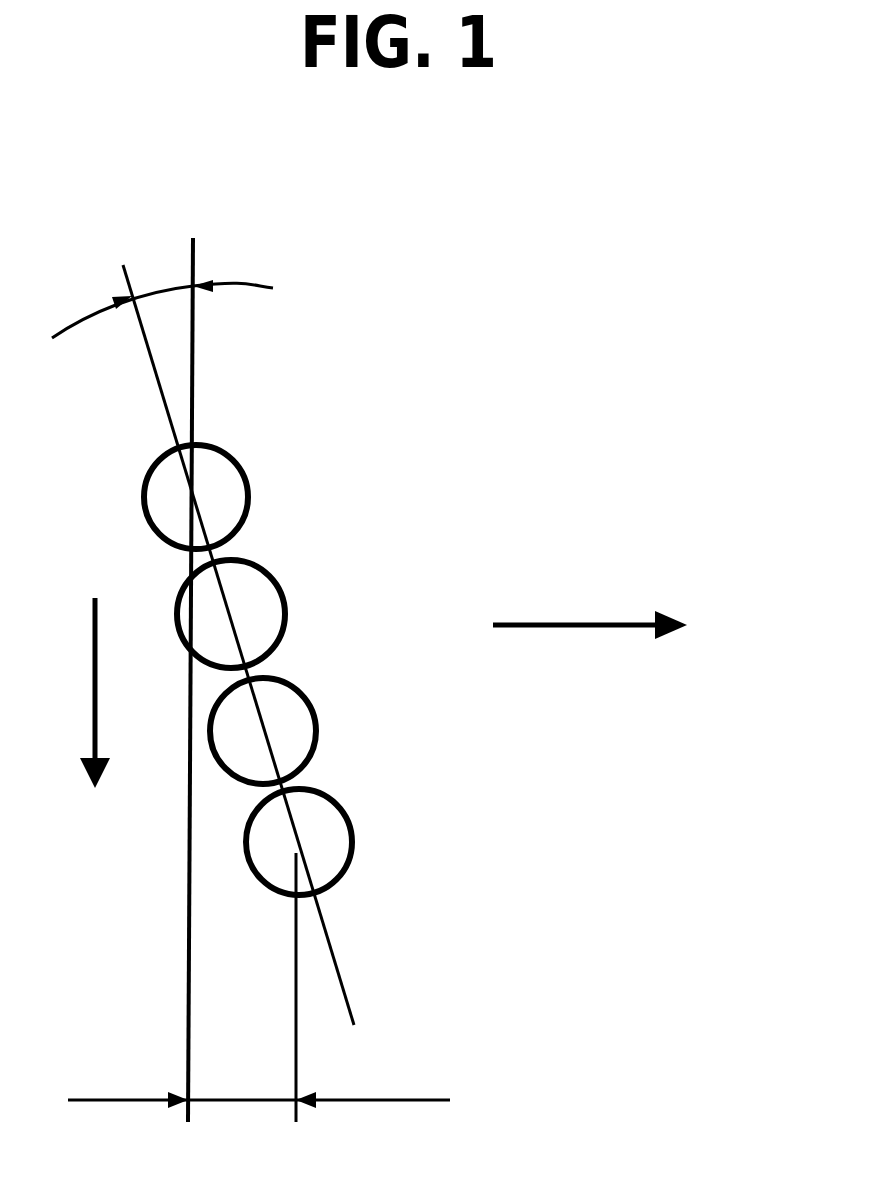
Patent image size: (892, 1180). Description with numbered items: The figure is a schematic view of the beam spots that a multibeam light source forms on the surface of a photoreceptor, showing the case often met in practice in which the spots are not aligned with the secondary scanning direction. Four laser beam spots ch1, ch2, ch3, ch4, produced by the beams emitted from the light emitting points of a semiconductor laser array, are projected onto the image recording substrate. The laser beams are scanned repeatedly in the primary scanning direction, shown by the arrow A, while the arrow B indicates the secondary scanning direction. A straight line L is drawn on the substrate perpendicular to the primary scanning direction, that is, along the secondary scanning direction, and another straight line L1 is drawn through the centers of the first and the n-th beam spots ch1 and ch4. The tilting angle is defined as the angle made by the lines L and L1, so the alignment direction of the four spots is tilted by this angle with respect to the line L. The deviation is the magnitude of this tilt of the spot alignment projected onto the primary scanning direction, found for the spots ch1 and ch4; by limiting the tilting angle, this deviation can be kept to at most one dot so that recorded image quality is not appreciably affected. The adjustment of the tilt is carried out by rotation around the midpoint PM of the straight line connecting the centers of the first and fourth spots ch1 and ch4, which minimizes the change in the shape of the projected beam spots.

The first laser beam spot ch1 is at (222, 483).
The second laser beam spot ch2 is at (257, 600).
The third laser beam spot ch3 is at (302, 723).
The fourth (n-th) laser beam spot ch4 is at (332, 833).
The midpoint PM is at (243, 666).
The straight line L is at (187, 923).
The straight line through beam spot centers L1 is at (333, 955).
The primary scanning direction A is at (590, 609).
The secondary scanning direction B is at (84, 693).